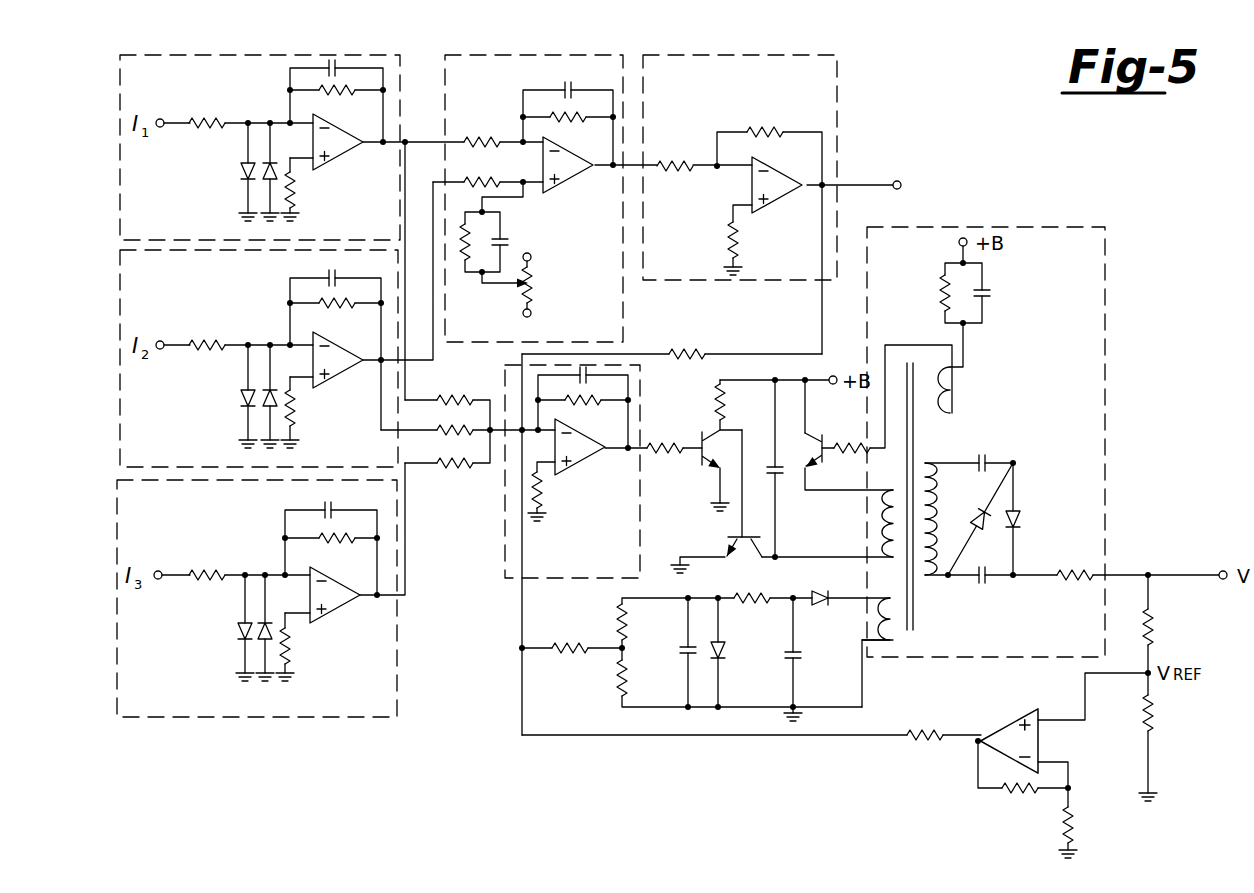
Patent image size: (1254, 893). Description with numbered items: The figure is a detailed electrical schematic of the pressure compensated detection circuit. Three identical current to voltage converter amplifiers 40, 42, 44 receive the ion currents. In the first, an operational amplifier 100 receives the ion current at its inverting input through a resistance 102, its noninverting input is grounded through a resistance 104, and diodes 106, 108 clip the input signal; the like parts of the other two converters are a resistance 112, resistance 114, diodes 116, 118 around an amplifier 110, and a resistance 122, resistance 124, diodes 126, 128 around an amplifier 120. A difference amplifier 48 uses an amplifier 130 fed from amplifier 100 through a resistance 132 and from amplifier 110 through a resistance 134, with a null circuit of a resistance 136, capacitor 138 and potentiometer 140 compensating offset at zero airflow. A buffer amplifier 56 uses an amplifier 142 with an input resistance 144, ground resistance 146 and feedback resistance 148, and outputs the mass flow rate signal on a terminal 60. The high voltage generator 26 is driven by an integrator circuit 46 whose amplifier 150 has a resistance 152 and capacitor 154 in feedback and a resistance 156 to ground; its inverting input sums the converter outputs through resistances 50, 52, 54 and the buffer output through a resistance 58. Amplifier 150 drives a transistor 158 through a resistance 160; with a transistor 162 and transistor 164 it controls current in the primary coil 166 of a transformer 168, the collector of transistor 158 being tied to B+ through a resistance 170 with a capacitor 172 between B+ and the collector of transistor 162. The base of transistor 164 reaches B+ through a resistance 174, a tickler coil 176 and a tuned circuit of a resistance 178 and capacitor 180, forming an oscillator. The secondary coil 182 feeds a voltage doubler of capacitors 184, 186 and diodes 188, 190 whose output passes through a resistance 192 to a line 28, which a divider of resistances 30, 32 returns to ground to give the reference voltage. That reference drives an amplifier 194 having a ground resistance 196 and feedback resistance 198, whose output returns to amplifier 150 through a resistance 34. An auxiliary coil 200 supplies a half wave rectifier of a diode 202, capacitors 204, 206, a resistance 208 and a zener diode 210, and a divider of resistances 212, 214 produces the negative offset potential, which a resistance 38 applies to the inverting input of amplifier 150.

The high voltage generator 26 is at (1082, 275).
The line 28 is at (1192, 553).
The resistance 30 is at (1153, 632).
The resistance 32 is at (1153, 722).
The resistance 34 is at (960, 690).
The resistance 38 is at (572, 655).
The amplifier 40 is at (185, 93).
The amplifier 42 is at (195, 290).
The amplifier 44 is at (170, 523).
The integrator circuit 46 is at (612, 565).
The difference amplifier 48 is at (495, 90).
The resistance 50 is at (448, 398).
The resistance 52 is at (448, 430).
The resistance 54 is at (455, 468).
The buffer amplifier 56 is at (710, 90).
The resistance 58 is at (690, 350).
The terminal 60 is at (898, 180).
The operational amplifier 100 is at (336, 168).
The resistance 102 is at (196, 120).
The resistance 104 is at (296, 192).
The diode 106 is at (243, 178).
The diode 108 is at (262, 165).
The amplifier 110 is at (332, 380).
The resistance 112 is at (205, 342).
The resistance 114 is at (296, 410).
The diode 116 is at (243, 405).
The diode 118 is at (263, 392).
The amplifier 120 is at (328, 612).
The resistance 122 is at (238, 542).
The resistance 124 is at (292, 650).
The diode 126 is at (240, 640).
The diode 128 is at (258, 625).
The amplifier 130 is at (568, 190).
The resistance 132 is at (476, 138).
The resistance 134 is at (468, 178).
The resistance 136 is at (452, 262).
The capacitor 138 is at (504, 242).
The potentiometer 140 is at (535, 287).
The amplifier 142 is at (785, 208).
The resistance 144 is at (680, 160).
The resistance 146 is at (728, 238).
The feedback resistance 148 is at (762, 128).
The amplifier 150 is at (583, 470).
The resistance 152 is at (575, 404).
The capacitor 154 is at (590, 380).
The resistance 156 is at (545, 495).
The transistor 158 is at (698, 462).
The resistance 160 is at (650, 445).
The transistor 162 is at (738, 538).
The transistor 164 is at (825, 470).
The primary coil 166 is at (880, 522).
The transformer 168 is at (915, 618).
The resistance 170 is at (722, 398).
The capacitor 172 is at (776, 467).
The resistance 174 is at (868, 418).
The tickler coil 176 is at (948, 405).
The resistance 178 is at (942, 295).
The capacitor 180 is at (988, 293).
The secondary coil 182 is at (930, 468).
The capacitor 184 is at (990, 460).
The capacitor 186 is at (988, 582).
The diode 188 is at (975, 516).
The diode 190 is at (1018, 508).
The resistance 192 is at (1092, 550).
The amplifier 194 is at (1000, 725).
The resistance 196 is at (1073, 830).
The feedback resistance 198 is at (1022, 795).
The auxiliary coil 200 is at (870, 645).
The diode 202 is at (818, 606).
The capacitor 204 is at (798, 670).
The capacitor 206 is at (680, 650).
The resistance 208 is at (745, 602).
The zener diode 210 is at (726, 658).
The resistance 212 is at (615, 623).
The resistance 214 is at (615, 684).